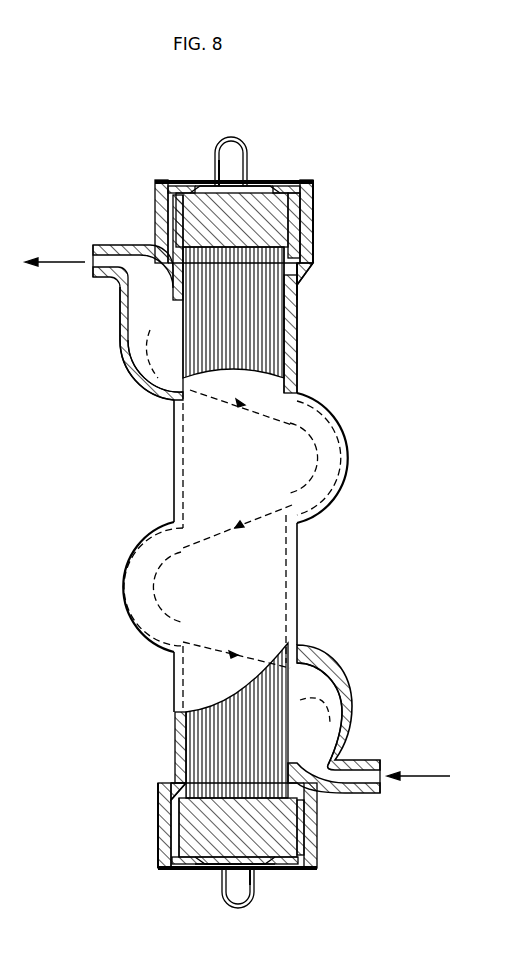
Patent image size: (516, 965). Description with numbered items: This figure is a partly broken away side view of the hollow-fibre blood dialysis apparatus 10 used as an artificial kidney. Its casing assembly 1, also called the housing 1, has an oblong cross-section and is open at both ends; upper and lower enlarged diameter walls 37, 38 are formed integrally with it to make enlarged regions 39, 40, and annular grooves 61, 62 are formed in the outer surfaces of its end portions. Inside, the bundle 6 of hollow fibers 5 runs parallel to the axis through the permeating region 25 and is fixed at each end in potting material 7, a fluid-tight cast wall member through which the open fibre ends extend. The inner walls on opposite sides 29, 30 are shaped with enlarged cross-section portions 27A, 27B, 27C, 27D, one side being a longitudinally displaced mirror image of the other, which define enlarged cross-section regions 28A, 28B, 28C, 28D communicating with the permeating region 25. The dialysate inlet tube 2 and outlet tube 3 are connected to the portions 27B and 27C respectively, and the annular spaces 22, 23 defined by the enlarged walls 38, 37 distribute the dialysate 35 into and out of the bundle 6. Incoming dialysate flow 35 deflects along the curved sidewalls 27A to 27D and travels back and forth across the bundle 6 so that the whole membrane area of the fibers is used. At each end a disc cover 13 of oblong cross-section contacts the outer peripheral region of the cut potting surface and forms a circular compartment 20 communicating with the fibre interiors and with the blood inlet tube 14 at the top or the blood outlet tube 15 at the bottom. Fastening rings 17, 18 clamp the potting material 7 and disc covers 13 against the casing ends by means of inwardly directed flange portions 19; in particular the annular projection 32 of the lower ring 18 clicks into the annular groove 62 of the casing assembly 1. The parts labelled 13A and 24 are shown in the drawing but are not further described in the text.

The casing assembly 1 is at (298, 357).
The inlet tube 2 is at (362, 794).
The outlet tube 3 is at (98, 279).
The hollow fibers 5 is at (268, 313).
The bundle 6 is at (184, 318).
The potting material 7 is at (301, 212).
The hollow-fibre blood dialysis apparatus 10 is at (346, 218).
The disc cover 13 is at (180, 187).
The end plate edge 13A is at (276, 186).
The blood inlet tube 14 is at (231, 140).
The outlet tube 15 is at (238, 910).
The fastening ring 17 is at (156, 200).
The fastening ring 18 is at (160, 855).
The inwardly directed flange portion 19 is at (313, 186).
The circular compartment 20 is at (250, 184).
The annular space 22 is at (338, 737).
The annular space 23 is at (120, 335).
The loop stem 24 is at (217, 172).
The permeating region 25 is at (177, 463).
The enlarged cross-section portion 27A is at (326, 412).
The enlarged cross-section portion 27B is at (340, 667).
The enlarged cross-section portion 27C is at (140, 380).
The enlarged cross-section portion 27D is at (130, 556).
The enlarged cross-section region 28A is at (338, 468).
The enlarged cross-section region 28B is at (345, 697).
The enlarged cross-section region 28C is at (128, 356).
The enlarged cross-section region 28D is at (126, 598).
The side 29 is at (300, 583).
The side 30 is at (176, 487).
The annular projection 32 is at (305, 262).
The dialysate 35 is at (52, 261).
The enlarged diameter wall 37 is at (305, 240).
The enlarged diameter wall 38 is at (165, 820).
The enlarged region 39 is at (303, 277).
The enlarged region 40 is at (176, 829).
The annular groove 61 is at (165, 256).
The annular groove 62 is at (170, 786).